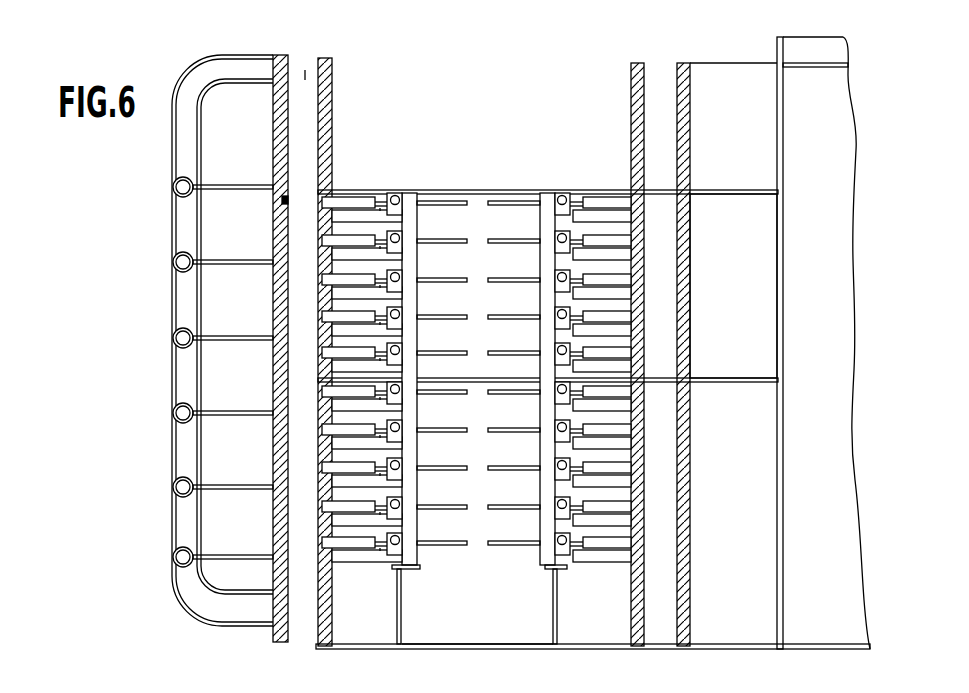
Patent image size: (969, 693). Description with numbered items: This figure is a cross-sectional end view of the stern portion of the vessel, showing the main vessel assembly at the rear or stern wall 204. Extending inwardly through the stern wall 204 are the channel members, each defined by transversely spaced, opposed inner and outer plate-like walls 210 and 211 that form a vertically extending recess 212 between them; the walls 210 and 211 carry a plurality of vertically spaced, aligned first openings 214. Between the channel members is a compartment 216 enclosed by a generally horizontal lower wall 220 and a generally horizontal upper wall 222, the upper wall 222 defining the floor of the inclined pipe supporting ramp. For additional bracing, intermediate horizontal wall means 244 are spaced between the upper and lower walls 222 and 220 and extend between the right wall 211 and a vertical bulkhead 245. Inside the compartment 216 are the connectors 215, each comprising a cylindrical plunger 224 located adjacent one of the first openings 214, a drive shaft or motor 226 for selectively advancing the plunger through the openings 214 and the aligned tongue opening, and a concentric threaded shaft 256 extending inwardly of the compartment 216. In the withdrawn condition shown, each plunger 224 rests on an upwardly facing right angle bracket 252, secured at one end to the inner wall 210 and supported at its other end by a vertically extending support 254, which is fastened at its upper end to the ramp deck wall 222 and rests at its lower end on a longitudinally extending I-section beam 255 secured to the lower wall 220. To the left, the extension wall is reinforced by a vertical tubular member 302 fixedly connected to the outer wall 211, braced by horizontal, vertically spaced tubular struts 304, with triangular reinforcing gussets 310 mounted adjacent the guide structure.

The vertical tubular member 302 is at (183, 226).
The tubular struts 304 is at (173, 189).
The triangular reinforcing gussets 310 is at (250, 186).
The inner wall 210 is at (333, 120).
The outer wall 211 is at (272, 108).
The vertically extending recess 212 is at (303, 75).
The first openings 214 is at (288, 200).
The upper wall 222 is at (523, 191).
The intermediate horizontal wall means 244 is at (762, 379).
The lower wall 220 is at (487, 648).
The stern wall 204 is at (742, 70).
The vertical bulkhead 245 is at (777, 250).
The vertically extending support 254 is at (412, 203).
The I-section beam 255 is at (402, 605).
The right angle bracket 252 is at (362, 555).
The compartment 216 is at (472, 604).
The cylindrical plunger 224 is at (345, 198).
The drive shaft 226 is at (392, 190).
The threaded shaft 256 is at (462, 199).
The connectors 215 is at (615, 517).